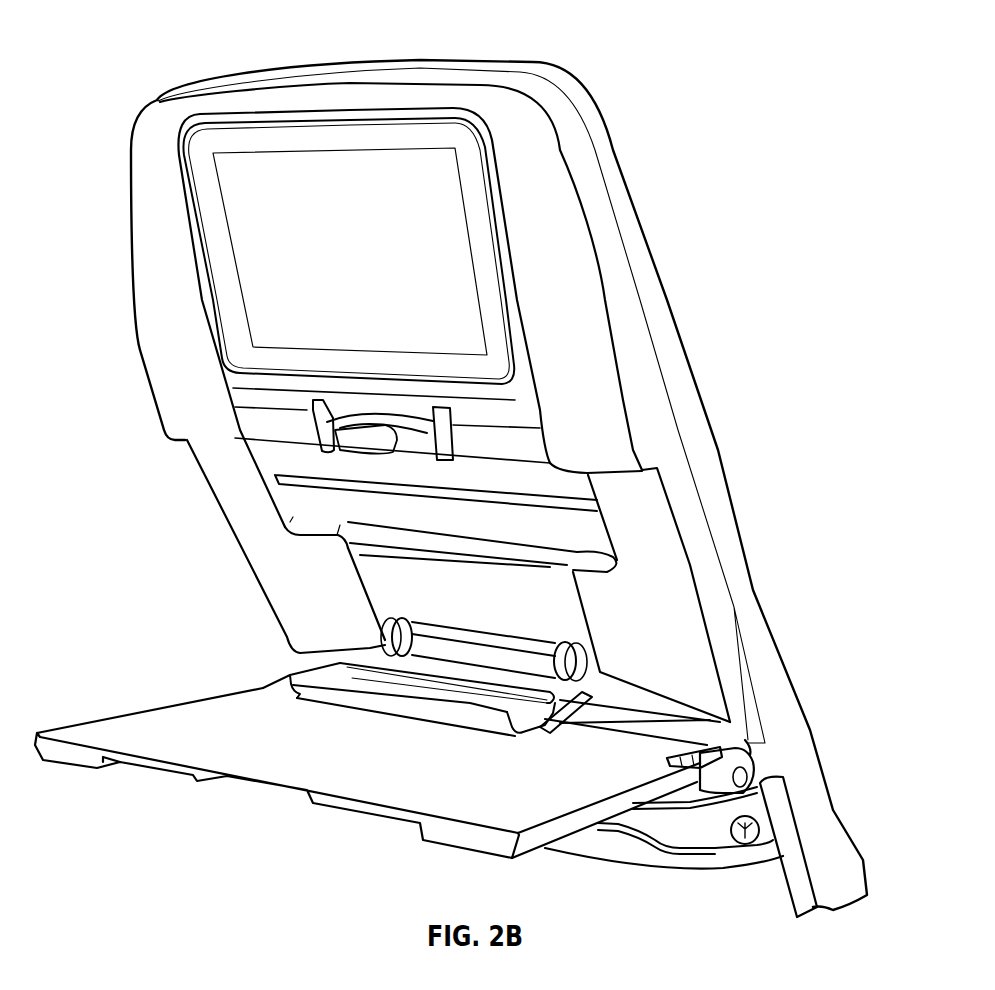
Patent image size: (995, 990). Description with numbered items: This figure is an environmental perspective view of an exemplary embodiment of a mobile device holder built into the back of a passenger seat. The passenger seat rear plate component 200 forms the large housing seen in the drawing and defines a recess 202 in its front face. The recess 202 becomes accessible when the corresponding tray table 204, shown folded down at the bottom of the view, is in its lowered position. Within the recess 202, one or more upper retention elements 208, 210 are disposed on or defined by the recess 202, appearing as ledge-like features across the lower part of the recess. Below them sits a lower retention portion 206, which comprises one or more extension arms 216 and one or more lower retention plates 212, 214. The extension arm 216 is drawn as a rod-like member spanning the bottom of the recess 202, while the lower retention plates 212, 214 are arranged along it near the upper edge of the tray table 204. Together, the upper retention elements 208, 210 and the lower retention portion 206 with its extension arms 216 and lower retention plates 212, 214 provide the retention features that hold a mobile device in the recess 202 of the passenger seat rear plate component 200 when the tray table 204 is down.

The passenger seat rear plate component 200 is at (235, 467).
The recess 202 is at (338, 510).
The tray table 204 is at (92, 730).
The lower retention portion 206 is at (528, 718).
The upper retention element 208 is at (590, 510).
The upper retention element 210 is at (590, 558).
The lower retention plate 212 is at (340, 697).
The lower retention plate 214 is at (545, 720).
The extension arm 216 is at (413, 633).